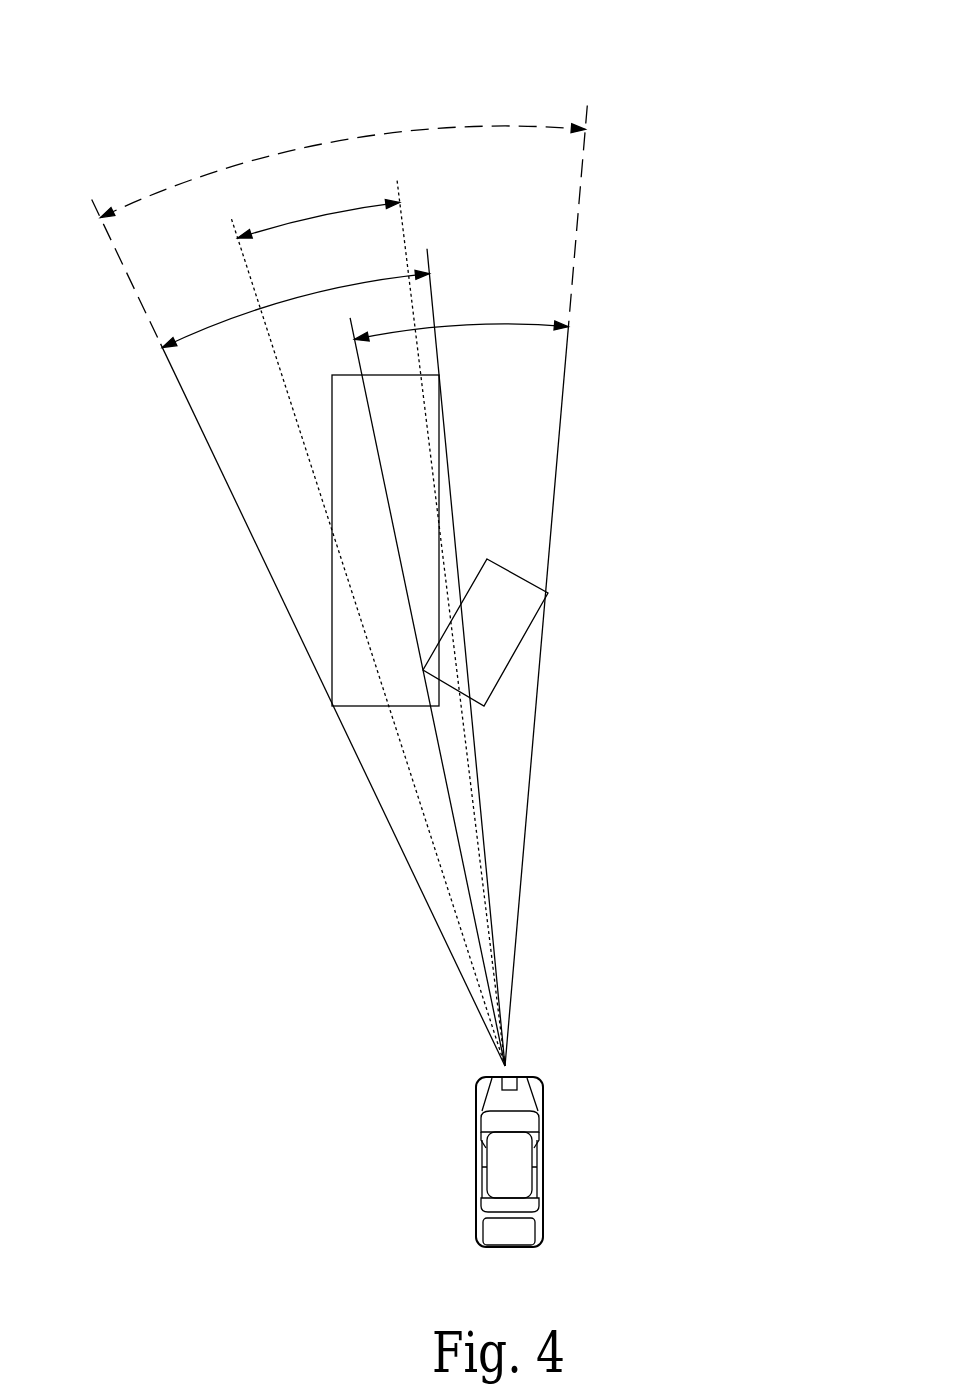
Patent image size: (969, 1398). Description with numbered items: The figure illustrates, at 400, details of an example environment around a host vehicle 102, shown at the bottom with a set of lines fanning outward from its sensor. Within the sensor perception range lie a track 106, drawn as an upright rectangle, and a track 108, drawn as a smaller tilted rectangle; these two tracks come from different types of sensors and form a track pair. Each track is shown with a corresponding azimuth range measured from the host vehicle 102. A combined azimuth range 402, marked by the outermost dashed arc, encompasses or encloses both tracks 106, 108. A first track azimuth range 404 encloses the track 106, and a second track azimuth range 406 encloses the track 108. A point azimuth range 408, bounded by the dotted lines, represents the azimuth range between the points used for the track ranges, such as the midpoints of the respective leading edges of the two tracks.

The details of the example environment 400 is at (836, 56).
The combined azimuth range 402 is at (340, 586).
The first track azimuth range 404 is at (333, 657).
The second track azimuth range 406 is at (459, 681).
The point azimuth range 408 is at (369, 623).
The track 106 is at (360, 540).
The track 108 is at (500, 618).
The host vehicle 102 is at (540, 1080).